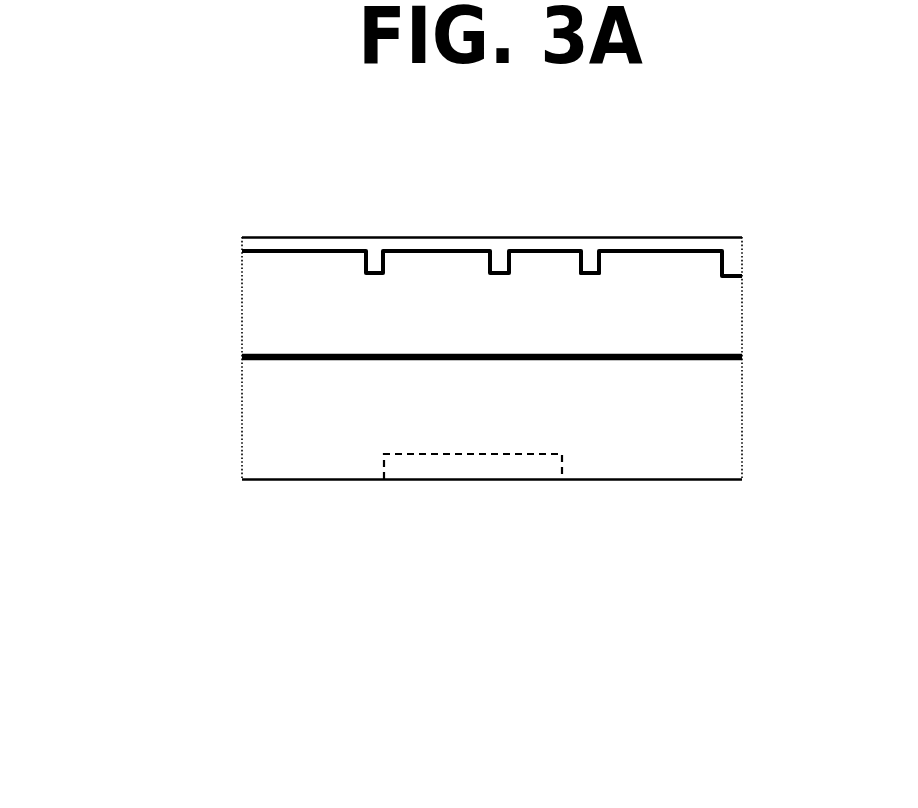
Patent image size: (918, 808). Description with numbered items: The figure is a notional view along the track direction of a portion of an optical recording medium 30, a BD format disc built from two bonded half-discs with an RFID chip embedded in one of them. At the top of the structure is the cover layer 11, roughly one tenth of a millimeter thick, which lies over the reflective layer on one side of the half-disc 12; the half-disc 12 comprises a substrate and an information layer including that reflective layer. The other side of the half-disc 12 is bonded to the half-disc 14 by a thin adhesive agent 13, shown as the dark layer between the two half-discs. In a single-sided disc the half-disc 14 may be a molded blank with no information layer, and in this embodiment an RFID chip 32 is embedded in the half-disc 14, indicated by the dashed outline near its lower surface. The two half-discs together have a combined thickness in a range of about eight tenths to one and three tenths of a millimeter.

The optical recording medium 30 is at (100, 365).
The cover layer 11 is at (590, 250).
The half-disc 12 is at (742, 312).
The adhesive agent 13 is at (742, 358).
The half-disc 14 is at (742, 430).
The RFID chip 32 is at (463, 468).